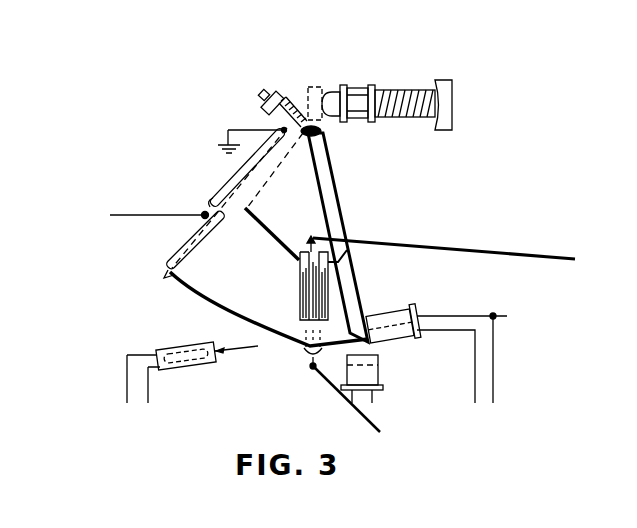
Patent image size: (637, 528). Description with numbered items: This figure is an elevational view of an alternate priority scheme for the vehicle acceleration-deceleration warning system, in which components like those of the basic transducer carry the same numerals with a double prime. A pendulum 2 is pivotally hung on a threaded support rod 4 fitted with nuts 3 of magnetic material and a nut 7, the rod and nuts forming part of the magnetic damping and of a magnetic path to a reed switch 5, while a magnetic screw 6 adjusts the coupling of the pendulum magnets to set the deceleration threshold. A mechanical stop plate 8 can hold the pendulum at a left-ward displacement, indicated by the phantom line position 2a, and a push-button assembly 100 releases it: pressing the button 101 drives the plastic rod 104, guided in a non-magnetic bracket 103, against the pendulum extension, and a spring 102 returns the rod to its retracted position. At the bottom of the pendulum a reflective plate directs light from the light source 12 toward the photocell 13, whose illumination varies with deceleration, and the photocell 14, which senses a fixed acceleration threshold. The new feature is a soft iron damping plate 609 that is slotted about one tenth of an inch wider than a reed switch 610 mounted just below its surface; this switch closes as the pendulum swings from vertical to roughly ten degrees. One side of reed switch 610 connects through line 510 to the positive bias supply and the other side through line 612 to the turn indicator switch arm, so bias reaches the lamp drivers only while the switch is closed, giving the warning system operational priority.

The pendulum 2 is at (338, 213).
The phantom line position of pendulum 2a is at (248, 197).
The nuts 3 is at (322, 133).
The threaded support rod 4 is at (283, 117).
The reed switch 5 is at (252, 163).
The screw 6 is at (260, 93).
The nut 7 is at (268, 100).
The mechanical stop plate 8 is at (190, 248).
The light source 12 is at (218, 371).
The photocell 13 is at (486, 259).
The photocell 14 is at (471, 346).
The push-button assembly 100 is at (425, 92).
The button 101 is at (551, 93).
The spring 102 is at (501, 133).
The bracket 103 is at (493, 49).
The plastic rod 104 is at (358, 56).
The line 510 is at (633, 243).
The damping plate 609 is at (205, 290).
The reed switch 610 is at (300, 322).
The line 612 is at (444, 428).